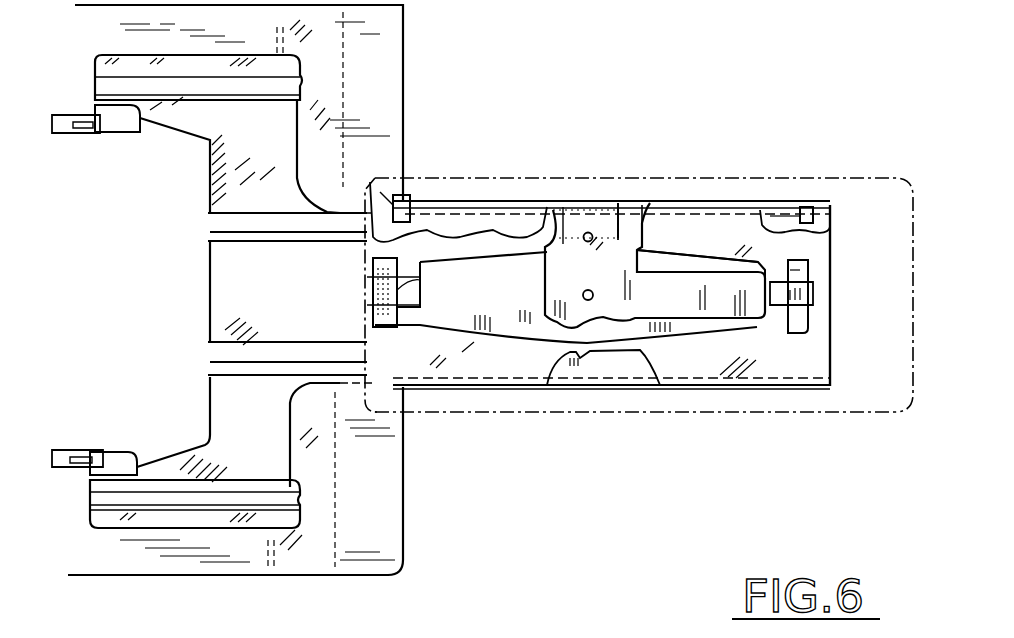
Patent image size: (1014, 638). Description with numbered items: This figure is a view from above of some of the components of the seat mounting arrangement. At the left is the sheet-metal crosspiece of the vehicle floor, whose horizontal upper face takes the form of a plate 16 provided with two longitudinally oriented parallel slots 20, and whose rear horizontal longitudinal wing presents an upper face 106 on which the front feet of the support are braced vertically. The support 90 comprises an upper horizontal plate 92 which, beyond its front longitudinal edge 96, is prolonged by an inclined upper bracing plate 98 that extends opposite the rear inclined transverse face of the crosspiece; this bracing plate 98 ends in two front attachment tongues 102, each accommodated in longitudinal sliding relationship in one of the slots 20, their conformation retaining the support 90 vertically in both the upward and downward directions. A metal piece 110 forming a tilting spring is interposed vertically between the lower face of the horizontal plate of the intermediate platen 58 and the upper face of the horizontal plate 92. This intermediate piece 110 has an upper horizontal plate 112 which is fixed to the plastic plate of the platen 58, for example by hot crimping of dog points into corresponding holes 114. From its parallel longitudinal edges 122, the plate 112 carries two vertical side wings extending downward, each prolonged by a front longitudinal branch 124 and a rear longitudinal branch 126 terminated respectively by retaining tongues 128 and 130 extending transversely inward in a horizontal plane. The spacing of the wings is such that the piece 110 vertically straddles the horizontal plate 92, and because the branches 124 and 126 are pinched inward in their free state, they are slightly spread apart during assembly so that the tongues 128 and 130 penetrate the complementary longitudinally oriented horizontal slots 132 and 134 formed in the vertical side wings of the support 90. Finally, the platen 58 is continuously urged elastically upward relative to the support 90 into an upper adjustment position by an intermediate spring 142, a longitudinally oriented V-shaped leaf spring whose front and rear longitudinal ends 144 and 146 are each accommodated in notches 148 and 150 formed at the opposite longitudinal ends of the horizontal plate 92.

The plate 16 is at (233, 520).
The longitudinally oriented parallel slots 20 is at (63, 137).
The intermediate platen 58 is at (788, 423).
The support 90 is at (837, 307).
The upper horizontal plate 92 is at (833, 385).
The front longitudinal edge 96 is at (463, 352).
The inclined upper bracing plate 98 is at (323, 263).
The front attachment tongues 102 is at (120, 126).
The upper face 106 is at (380, 508).
The metal piece 110 is at (652, 233).
The upper horizontal plate 112 is at (617, 237).
The holes 114 is at (588, 232).
The parallel longitudinal edges 122 is at (592, 227).
The front longitudinal branch 124 is at (472, 203).
The rear longitudinal branch 126 is at (778, 210).
The retaining tongue 128 is at (407, 200).
The retaining tongue 130 is at (833, 215).
The slot 132 is at (373, 200).
The slot 134 is at (793, 210).
The intermediate spring 142 is at (520, 342).
The front longitudinal end 144 is at (400, 295).
The rear longitudinal end 146 is at (793, 297).
The notch 148 is at (383, 272).
The notch 150 is at (803, 267).